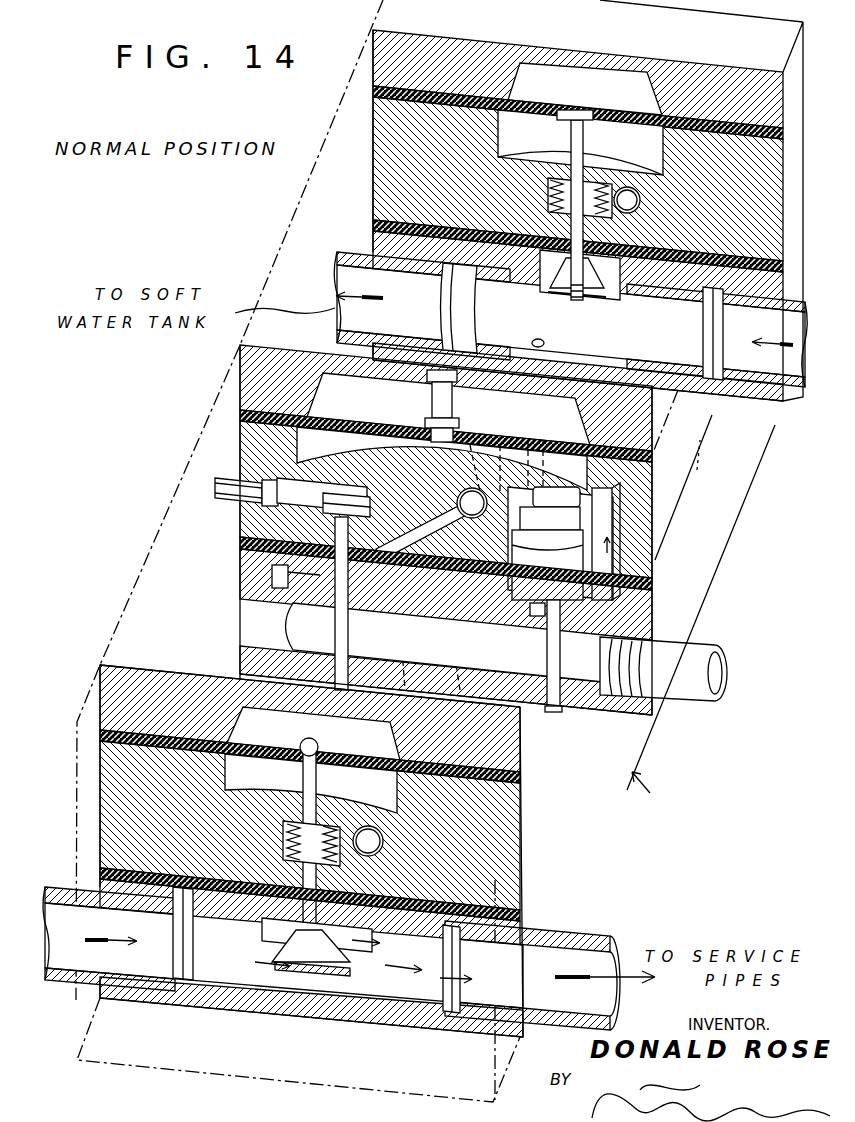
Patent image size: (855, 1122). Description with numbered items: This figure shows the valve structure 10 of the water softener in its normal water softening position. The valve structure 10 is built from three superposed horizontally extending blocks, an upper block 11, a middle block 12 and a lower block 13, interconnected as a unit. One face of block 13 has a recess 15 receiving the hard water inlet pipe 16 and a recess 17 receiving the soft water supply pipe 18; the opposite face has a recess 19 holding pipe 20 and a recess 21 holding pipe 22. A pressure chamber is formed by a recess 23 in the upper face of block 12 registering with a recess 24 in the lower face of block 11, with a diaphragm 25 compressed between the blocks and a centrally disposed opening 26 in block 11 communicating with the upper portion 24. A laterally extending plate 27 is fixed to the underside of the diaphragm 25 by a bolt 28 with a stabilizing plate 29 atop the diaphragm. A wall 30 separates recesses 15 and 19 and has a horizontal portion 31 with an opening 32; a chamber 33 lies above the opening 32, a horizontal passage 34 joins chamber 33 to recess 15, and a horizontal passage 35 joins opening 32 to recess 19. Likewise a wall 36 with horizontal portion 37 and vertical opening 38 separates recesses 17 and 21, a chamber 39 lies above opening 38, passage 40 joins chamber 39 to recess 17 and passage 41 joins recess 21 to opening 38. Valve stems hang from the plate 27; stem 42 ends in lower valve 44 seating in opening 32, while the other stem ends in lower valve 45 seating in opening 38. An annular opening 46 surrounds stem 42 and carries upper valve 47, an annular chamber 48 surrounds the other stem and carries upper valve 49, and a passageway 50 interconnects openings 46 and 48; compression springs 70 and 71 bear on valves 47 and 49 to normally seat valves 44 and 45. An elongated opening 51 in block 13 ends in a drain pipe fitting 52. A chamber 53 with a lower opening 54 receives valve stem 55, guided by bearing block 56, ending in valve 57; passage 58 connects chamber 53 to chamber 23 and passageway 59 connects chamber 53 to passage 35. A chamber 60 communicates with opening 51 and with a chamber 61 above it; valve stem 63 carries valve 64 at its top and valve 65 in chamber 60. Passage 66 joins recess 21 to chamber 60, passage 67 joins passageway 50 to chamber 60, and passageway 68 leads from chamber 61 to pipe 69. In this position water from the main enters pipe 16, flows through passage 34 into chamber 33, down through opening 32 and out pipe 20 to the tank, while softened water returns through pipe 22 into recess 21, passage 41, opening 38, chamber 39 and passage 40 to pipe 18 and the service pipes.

The valve structure 10 is at (645, 793).
The block 11 is at (660, 415).
The block 12 is at (697, 470).
The block 13 is at (742, 510).
The recess 15 is at (712, 339).
The hard water inlet pipe 16 is at (793, 400).
The recess 17 is at (416, 1020).
The soft water supply pipe 18 is at (596, 930).
The recess 19 is at (462, 304).
The pipe 20 is at (350, 252).
The recess 21 is at (215, 1000).
The pipe 22 is at (58, 885).
The recess 23 is at (500, 137).
The recess 24 is at (532, 68).
The diaphragm 25 is at (400, 100).
The centrally disposed opening 26 is at (428, 380).
The laterally extending plate 27 is at (300, 752).
The bolt 28 is at (440, 432).
The stabilizing plate 29 is at (460, 388).
The wall 30 is at (446, 398).
The horizontal portion 31 is at (606, 300).
The opening 32 is at (588, 302).
The chamber 33 is at (578, 179).
The horizontal passage 34 is at (578, 270).
The horizontal passage 35 is at (578, 372).
The wall 36 is at (362, 1002).
The horizontal portion 37 is at (258, 985).
The vertical opening 38 is at (325, 975).
The chamber 39 is at (392, 851).
The horizontal passage 40 is at (405, 950).
The horizontal passage 41 is at (290, 985).
The valve stem 42 is at (585, 140).
The lower valve 44 is at (559, 275).
The lower valve 45 is at (256, 930).
The annular opening 46 is at (548, 190).
The upper valve 47 is at (560, 214).
The annular chamber 48 is at (323, 841).
The upper valve 49 is at (283, 850).
The passageway 50 is at (445, 650).
The elongated opening 51 is at (396, 630).
The drain pipe fitting 52 is at (705, 660).
The chamber 53 is at (480, 515).
The opening 54 is at (535, 620).
The valve stem 55 is at (562, 700).
The bearing block 56 is at (552, 714).
The valve 57 is at (556, 572).
The passage 58 is at (622, 480).
The passageway 59 is at (446, 498).
The chamber 60 is at (272, 570).
The chamber 61 is at (345, 488).
The valve stem 63 is at (349, 636).
The valve 64 is at (372, 502).
The valve 65 is at (370, 575).
The passage 66 is at (205, 790).
The passage 67 is at (442, 500).
The passageway 68 is at (262, 500).
The pipe 69 is at (232, 480).
The compression spring 70 is at (630, 186).
The compression spring 71 is at (283, 834).